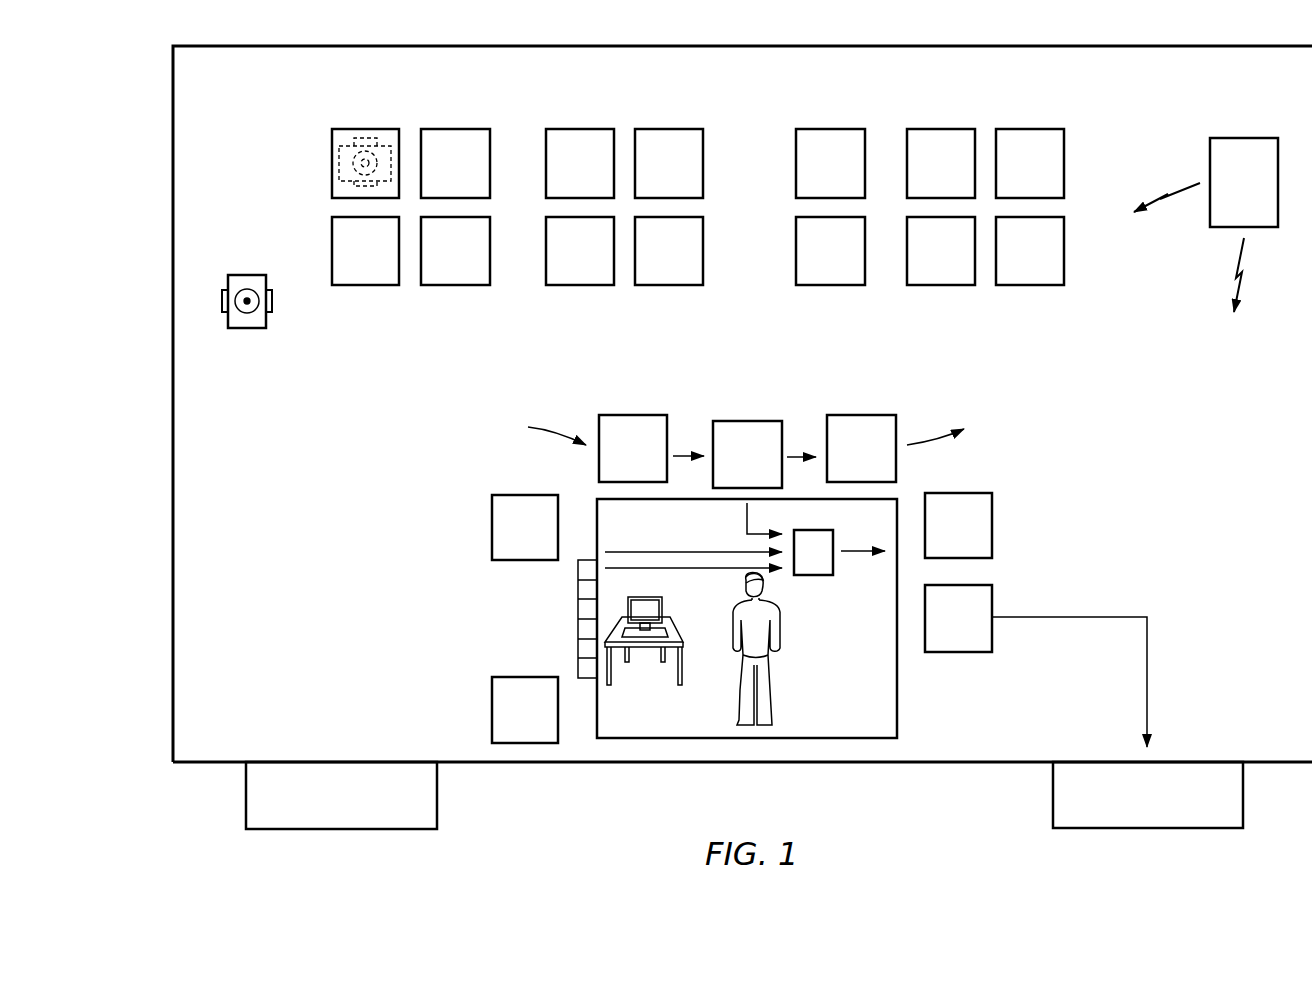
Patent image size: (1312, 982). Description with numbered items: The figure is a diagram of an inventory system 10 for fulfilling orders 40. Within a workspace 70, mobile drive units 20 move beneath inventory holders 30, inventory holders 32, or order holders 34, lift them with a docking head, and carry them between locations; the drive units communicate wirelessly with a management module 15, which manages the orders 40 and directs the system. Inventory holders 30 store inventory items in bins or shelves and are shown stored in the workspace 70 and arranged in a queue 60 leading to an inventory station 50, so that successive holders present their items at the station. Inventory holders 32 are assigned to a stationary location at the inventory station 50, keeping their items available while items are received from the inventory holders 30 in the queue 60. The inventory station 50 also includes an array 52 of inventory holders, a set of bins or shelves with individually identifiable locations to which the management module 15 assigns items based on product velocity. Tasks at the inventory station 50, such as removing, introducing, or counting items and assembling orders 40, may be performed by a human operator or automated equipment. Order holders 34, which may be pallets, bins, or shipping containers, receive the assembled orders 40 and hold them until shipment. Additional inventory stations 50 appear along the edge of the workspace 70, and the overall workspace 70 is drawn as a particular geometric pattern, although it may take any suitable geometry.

The inventory system 10 is at (118, 238).
The management module 15 is at (1228, 197).
The mobile drive unit 20 is at (243, 275).
The inventory holder 30 is at (350, 265).
The inventory holder 32 is at (510, 541).
The order holder 34 is at (943, 541).
The order 40 is at (820, 577).
The inventory station 50 is at (818, 681).
The array of inventory holders 52 is at (577, 629).
The queue 60 is at (553, 433).
The workspace 70 is at (256, 129).